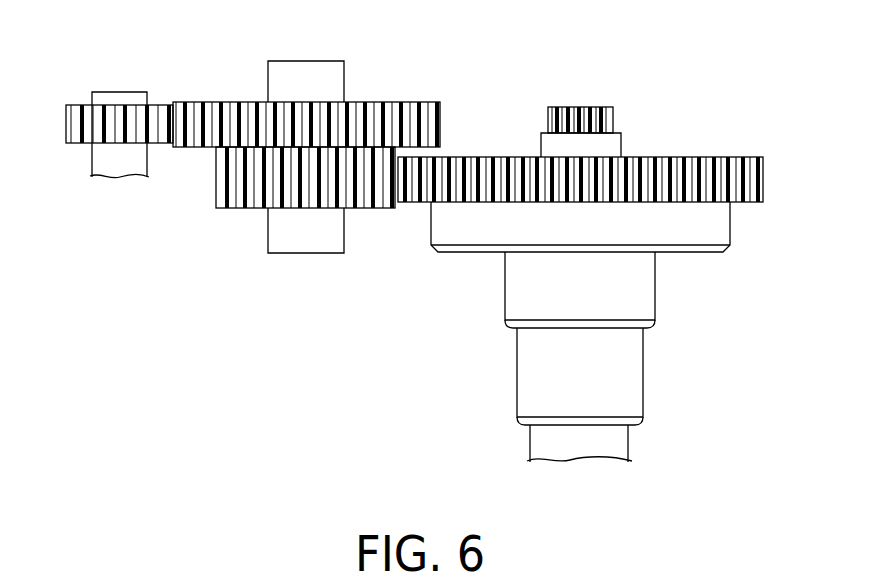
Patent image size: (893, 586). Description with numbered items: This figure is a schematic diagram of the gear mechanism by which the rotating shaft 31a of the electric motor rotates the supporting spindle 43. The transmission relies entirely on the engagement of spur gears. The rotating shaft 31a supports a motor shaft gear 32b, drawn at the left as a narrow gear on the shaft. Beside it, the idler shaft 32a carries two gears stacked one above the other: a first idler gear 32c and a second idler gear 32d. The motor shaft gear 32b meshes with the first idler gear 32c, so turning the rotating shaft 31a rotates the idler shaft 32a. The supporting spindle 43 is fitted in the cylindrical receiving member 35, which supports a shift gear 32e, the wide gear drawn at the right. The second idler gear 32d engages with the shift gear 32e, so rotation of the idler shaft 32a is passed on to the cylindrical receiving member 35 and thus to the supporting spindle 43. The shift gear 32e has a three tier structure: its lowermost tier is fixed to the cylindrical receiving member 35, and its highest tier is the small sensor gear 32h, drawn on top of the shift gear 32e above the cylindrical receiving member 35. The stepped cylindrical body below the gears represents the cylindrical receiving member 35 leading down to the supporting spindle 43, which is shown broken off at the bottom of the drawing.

The motor shaft gear 32b is at (80, 104).
The rotating shaft 31a is at (115, 92).
The first idler gear 32c is at (207, 102).
The second idler gear 32d is at (368, 208).
The idler shaft 32a is at (297, 61).
The sensor gear 32h is at (589, 107).
The shift gear 32e is at (733, 157).
The cylindrical receiving member 35 is at (730, 223).
The supporting spindle 43 is at (628, 443).